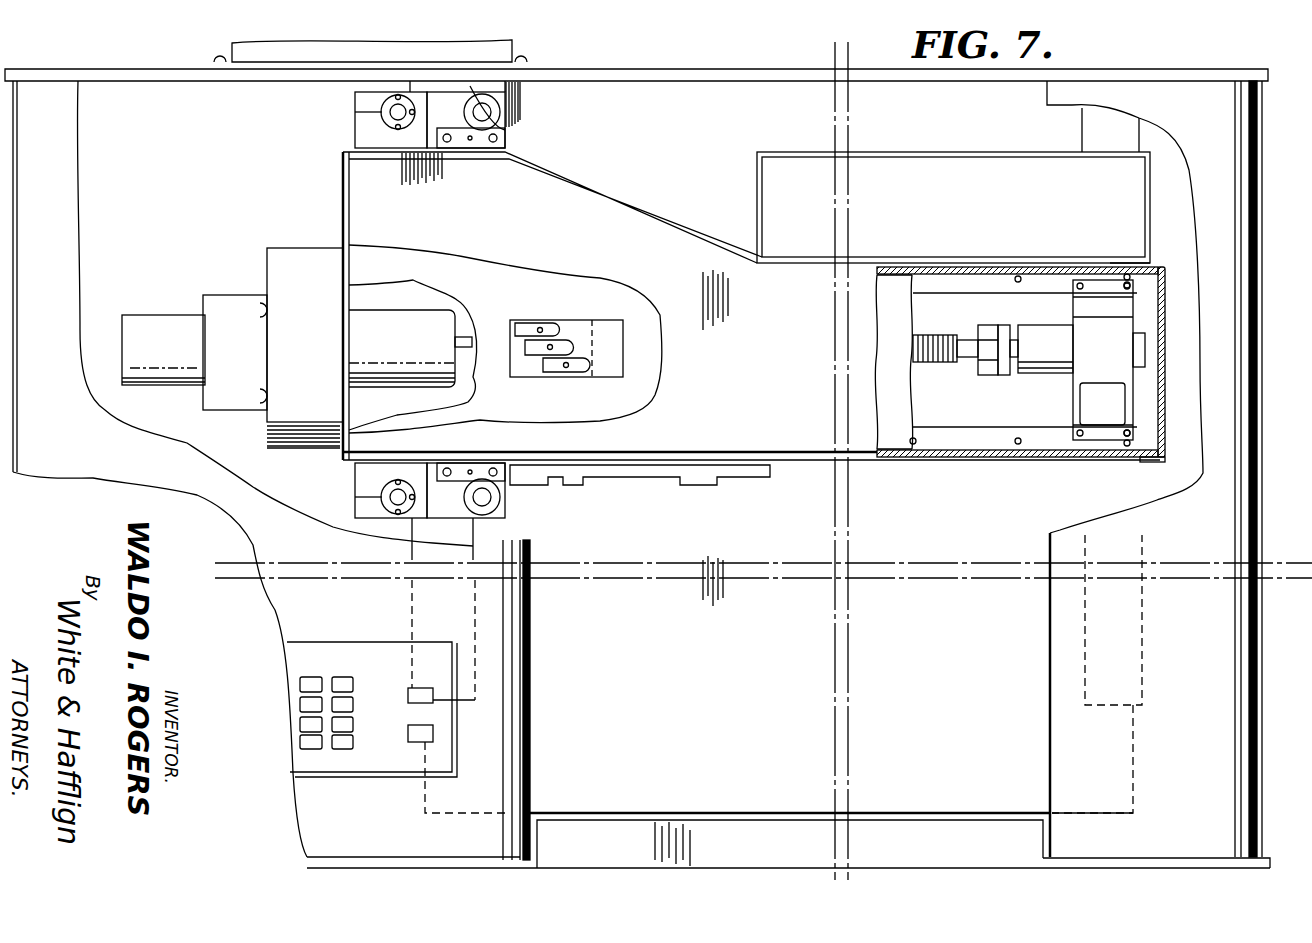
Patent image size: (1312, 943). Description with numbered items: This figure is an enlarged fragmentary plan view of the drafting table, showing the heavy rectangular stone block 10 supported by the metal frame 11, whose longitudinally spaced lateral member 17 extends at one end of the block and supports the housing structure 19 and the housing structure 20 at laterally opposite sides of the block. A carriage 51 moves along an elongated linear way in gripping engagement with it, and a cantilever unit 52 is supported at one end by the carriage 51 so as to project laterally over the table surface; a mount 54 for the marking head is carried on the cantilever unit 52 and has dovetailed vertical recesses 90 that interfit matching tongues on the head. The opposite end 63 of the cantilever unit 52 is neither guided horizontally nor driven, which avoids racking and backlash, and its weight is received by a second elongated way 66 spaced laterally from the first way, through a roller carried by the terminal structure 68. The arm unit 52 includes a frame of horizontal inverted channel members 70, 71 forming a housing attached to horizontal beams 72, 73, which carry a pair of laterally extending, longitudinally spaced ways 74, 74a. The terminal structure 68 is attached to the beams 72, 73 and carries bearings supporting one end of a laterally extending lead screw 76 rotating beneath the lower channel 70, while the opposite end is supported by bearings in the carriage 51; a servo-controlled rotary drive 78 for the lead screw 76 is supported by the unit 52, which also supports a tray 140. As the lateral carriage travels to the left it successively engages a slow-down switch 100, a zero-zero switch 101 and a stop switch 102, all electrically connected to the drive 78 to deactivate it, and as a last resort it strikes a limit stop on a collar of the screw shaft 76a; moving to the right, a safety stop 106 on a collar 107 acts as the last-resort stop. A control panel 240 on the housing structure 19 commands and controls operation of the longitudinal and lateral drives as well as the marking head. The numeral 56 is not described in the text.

The stone block 10 is at (863, 481).
The metal frame 11 is at (778, 62).
The lateral member 17 is at (790, 844).
The housing structure 19 is at (52, 105).
The housing structure 20 is at (1212, 100).
The carriage 51 is at (352, 127).
The cantilever unit 52 is at (751, 379).
The mount 54 is at (725, 483).
The guide rail 56 is at (230, 43).
The end of cantilever unit 63 is at (1166, 376).
The second elongated way 66 is at (1117, 500).
The terminal structure 68 is at (1115, 359).
The inverted channel member 70 is at (893, 446).
The inverted channel member 71 is at (940, 458).
The horizontal beam 72 is at (1110, 264).
The horizontal beam 73 is at (1160, 462).
The way 74 is at (1135, 292).
The way 74a is at (1025, 440).
The lead screw 76 is at (922, 362).
The screw shaft 76a is at (468, 357).
The rotary drive 78 is at (262, 248).
The dovetailed vertical recess 90 is at (696, 483).
The slow-down switch 100 is at (580, 374).
The 0-0 switch 101 is at (562, 348).
The STOP switch 102 is at (554, 330).
The safety stop 106 is at (976, 345).
The collar 107 is at (990, 356).
The tray 140 is at (953, 172).
The control panel 240 is at (318, 748).